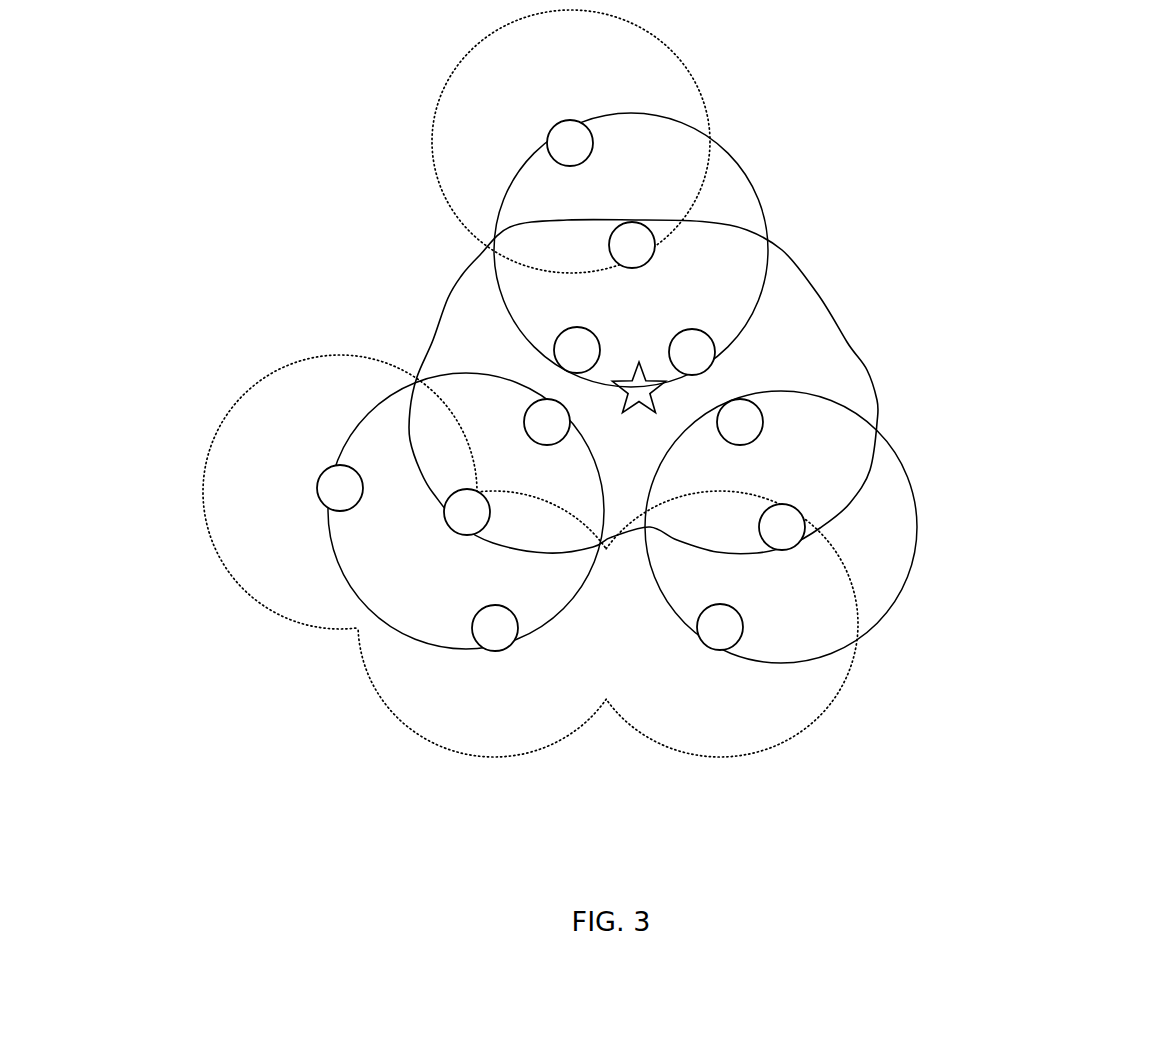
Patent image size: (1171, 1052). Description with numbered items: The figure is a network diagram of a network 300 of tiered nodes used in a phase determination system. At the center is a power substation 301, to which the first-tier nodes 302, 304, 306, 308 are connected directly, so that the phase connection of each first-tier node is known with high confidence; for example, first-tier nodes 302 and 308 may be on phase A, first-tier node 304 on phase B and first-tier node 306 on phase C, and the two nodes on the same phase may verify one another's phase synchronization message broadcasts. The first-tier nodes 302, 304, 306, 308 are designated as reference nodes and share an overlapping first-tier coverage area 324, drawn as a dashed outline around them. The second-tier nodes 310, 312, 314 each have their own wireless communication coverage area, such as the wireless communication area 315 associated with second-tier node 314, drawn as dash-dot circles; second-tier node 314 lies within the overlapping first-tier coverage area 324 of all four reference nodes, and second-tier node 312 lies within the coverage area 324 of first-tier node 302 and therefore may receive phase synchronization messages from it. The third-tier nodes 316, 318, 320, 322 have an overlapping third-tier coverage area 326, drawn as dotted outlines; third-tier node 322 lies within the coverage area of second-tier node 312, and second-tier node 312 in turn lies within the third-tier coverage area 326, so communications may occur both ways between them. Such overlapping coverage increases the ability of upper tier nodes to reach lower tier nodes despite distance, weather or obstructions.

The network 300 is at (1066, 115).
The power substation 301 is at (637, 372).
The first-tier node 302 is at (742, 402).
The first-tier node 304 is at (552, 405).
The first-tier node 306 is at (577, 328).
The first-tier node 308 is at (693, 330).
The second-tier node 310 is at (483, 498).
The second-tier node 312 is at (780, 507).
The second-tier node 314 is at (634, 224).
The wireless communication area 315 is at (754, 182).
The third-tier node 316 is at (320, 488).
The third-tier node 318 is at (503, 648).
The third-tier node 320 is at (556, 130).
The third-tier node 322 is at (715, 648).
The first-tier coverage area 324 is at (456, 289).
The third-tier coverage area 326 is at (555, 745).